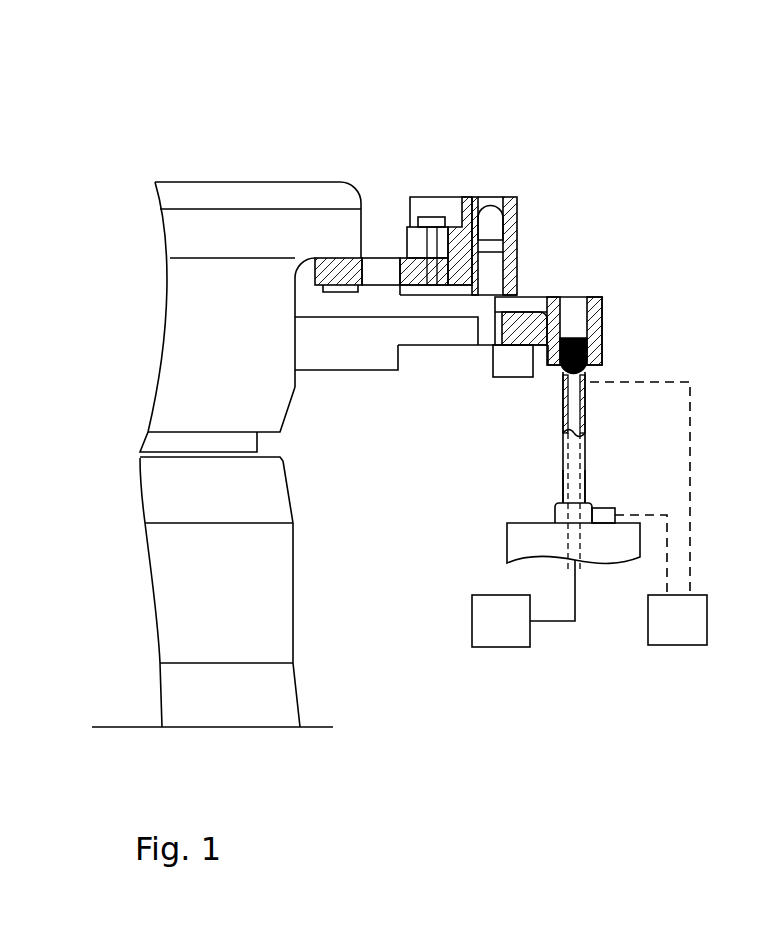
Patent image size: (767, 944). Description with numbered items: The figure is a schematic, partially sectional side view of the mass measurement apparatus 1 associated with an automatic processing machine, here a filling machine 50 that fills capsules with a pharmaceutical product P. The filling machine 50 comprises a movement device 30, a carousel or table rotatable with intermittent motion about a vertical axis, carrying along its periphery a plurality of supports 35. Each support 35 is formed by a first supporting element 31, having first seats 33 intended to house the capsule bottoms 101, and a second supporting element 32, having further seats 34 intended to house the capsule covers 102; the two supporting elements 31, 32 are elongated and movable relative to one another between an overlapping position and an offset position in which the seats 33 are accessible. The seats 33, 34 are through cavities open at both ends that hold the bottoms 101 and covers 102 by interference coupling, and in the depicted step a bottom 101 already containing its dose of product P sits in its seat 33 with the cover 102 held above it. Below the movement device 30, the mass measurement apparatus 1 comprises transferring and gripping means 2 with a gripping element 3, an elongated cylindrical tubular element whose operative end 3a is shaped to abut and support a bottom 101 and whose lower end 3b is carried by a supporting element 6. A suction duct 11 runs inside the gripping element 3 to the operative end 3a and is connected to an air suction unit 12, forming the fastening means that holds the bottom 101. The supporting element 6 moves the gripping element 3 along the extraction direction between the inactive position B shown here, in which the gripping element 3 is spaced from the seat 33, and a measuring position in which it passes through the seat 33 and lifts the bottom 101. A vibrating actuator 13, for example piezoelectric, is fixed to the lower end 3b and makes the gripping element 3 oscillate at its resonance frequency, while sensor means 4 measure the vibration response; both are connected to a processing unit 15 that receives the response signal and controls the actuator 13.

The mass measurement apparatus 1 is at (474, 687).
The transferring and gripping means 2 is at (612, 470).
The gripping element 3 is at (563, 458).
The operative end 3a is at (563, 375).
The lower end 3b is at (560, 502).
The sensor means 4 is at (585, 380).
The supporting element 6 is at (600, 560).
The suction duct 11 is at (573, 492).
The air suction unit 12 is at (485, 625).
The vibrating actuator 13 is at (607, 515).
The processing unit 15 is at (660, 640).
The movement device 30 is at (272, 225).
The first supporting element 31 is at (330, 343).
The second supporting element 32 is at (388, 268).
The first seat 33 is at (593, 323).
The further seat 34 is at (474, 197).
The support 35 is at (327, 397).
The filling machine 50 is at (190, 128).
The bottom 101 is at (568, 305).
The cover 102 is at (505, 255).
The inactive position B is at (632, 426).
The product P is at (592, 350).